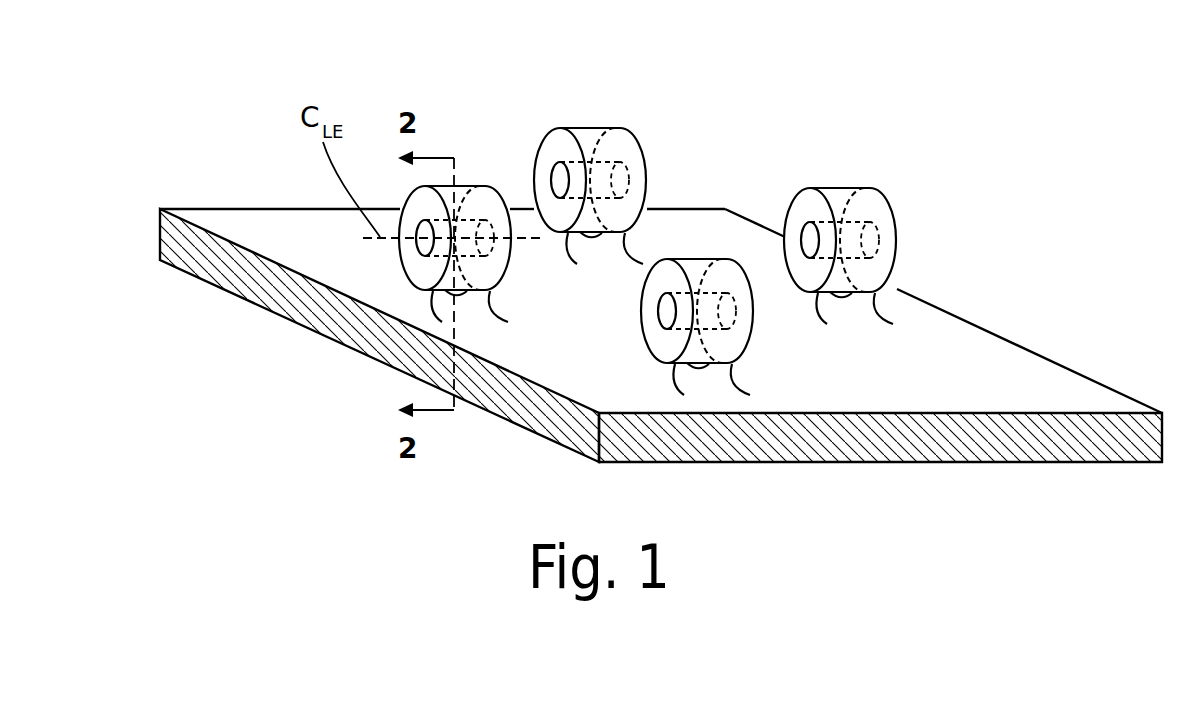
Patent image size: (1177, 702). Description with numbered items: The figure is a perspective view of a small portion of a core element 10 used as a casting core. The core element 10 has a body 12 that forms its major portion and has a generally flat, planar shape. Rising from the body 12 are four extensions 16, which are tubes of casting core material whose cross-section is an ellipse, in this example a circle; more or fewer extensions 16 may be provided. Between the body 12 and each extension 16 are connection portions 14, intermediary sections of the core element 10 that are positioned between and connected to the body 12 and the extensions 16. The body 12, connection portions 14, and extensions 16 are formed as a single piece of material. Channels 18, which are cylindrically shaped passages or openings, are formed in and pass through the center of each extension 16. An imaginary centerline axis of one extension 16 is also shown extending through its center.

The core element 10 is at (1003, 100).
The body 12 is at (240, 227).
The connection portions 14 is at (526, 236).
The extensions 16 is at (512, 262).
The channels 18 is at (468, 262).